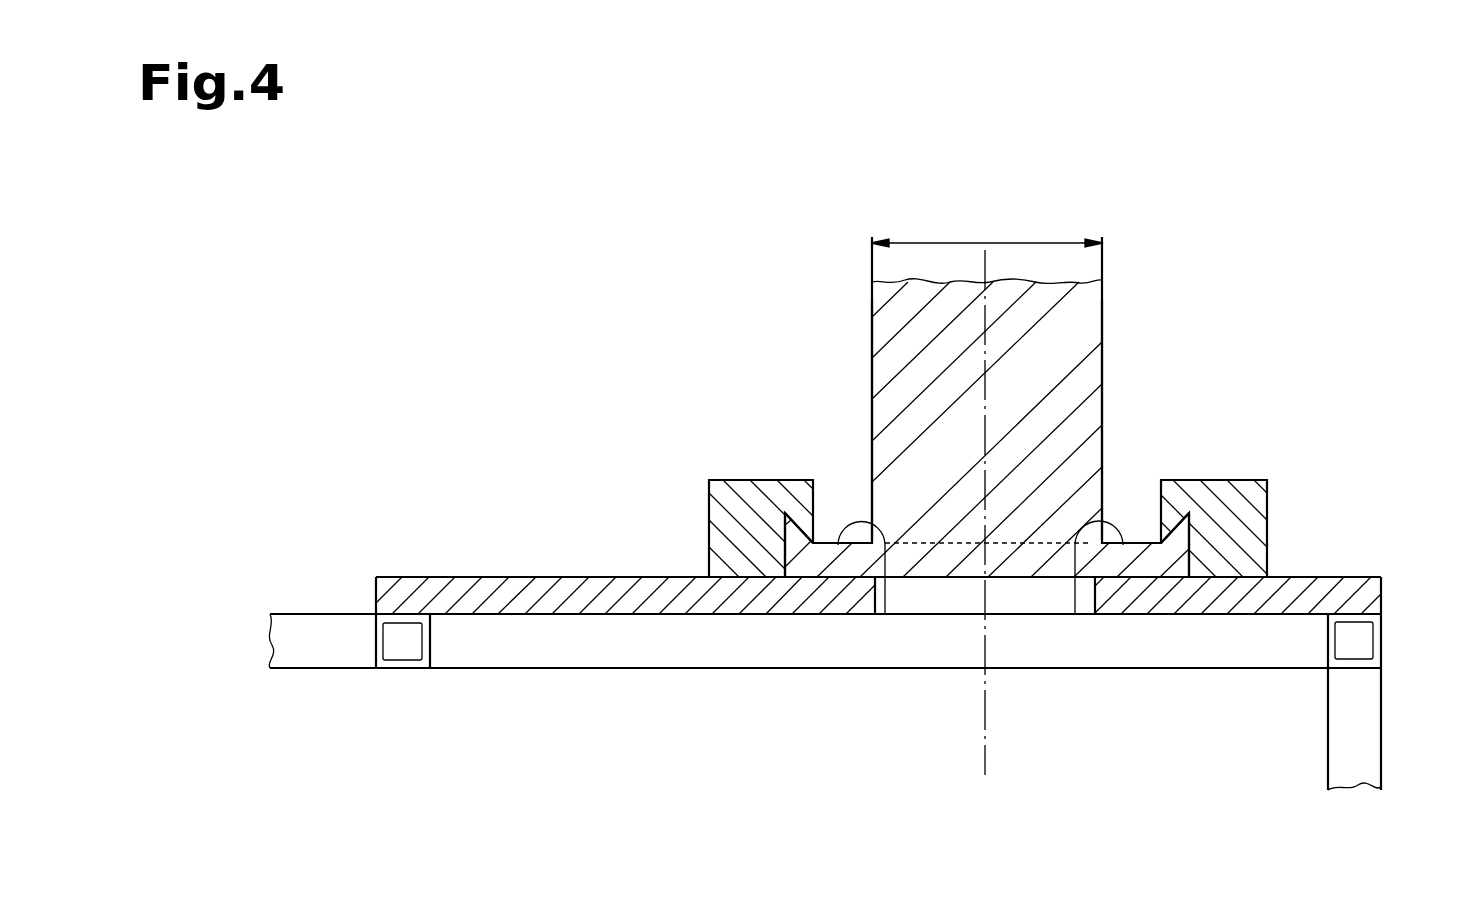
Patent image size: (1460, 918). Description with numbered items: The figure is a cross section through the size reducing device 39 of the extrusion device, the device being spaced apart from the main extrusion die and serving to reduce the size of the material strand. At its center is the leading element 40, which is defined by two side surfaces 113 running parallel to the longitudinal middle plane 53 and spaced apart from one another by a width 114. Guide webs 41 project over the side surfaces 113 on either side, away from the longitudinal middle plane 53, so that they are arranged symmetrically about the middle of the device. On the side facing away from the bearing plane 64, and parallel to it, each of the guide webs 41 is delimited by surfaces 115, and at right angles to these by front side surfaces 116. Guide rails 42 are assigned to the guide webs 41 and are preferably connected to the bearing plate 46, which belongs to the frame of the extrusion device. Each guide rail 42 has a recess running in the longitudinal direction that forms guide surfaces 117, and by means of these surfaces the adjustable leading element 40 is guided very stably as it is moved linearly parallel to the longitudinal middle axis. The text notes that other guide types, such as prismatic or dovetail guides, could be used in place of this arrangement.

The size reducing device 39 is at (1165, 242).
The leading element 40 is at (1115, 230).
The guide webs 41 is at (840, 488).
The guide rails 42 is at (685, 455).
The bearing plate 46 is at (1228, 597).
The longitudinal middle plane 53 is at (985, 270).
The bearing plane 64 is at (1372, 575).
The side surfaces 113 is at (870, 338).
The width 114 is at (1015, 243).
The surfaces 115 is at (885, 614).
The front side surfaces 116 is at (798, 532).
The guide surfaces 117 is at (800, 535).